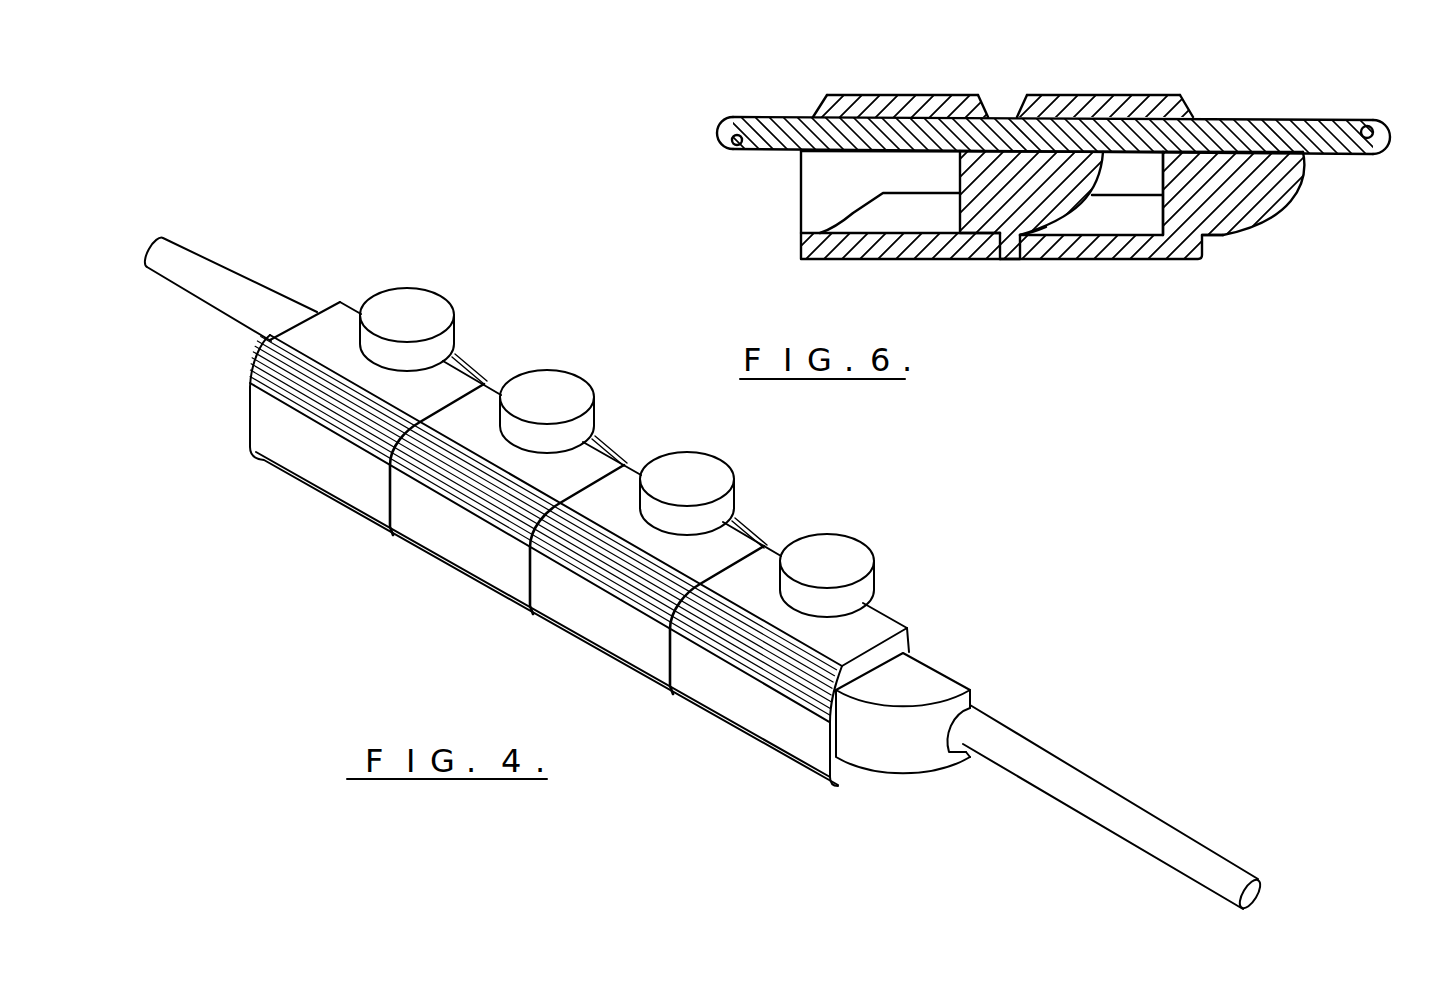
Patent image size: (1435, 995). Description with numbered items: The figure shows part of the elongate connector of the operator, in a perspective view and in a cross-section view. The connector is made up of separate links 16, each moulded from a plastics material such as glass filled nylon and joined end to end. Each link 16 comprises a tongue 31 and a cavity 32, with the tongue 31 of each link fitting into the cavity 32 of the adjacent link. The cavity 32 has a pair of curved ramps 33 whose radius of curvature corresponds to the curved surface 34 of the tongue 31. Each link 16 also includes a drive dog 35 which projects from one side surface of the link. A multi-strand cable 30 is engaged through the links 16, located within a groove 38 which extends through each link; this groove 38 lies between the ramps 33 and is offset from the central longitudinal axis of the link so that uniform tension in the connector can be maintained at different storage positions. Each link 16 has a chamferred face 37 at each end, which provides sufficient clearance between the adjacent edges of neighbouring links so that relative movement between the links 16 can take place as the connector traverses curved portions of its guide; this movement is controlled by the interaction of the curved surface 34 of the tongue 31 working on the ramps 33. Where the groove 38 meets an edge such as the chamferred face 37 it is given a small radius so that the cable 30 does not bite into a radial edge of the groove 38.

In FIG. 4, the link 16 is at (587, 636).
In FIG. 6, the link 16 is at (902, 93).
In FIG. 4, the multi-strand cable 30 is at (198, 263).
In FIG. 6, the multi-strand cable 30 is at (1345, 122).
In FIG. 4, the tongue 31 is at (922, 683).
In FIG. 6, the tongue 31 is at (1250, 182).
In FIG. 6, the cavity 32 is at (820, 168).
In FIG. 6, the curved ramps 33 is at (830, 208).
In FIG. 4, the curved surface 34 is at (898, 748).
In FIG. 6, the curved surface 34 is at (1278, 203).
In FIG. 4, the drive dog 35 is at (682, 467).
In FIG. 4, the chamferred face 37 is at (490, 387).
In FIG. 6, the chamferred face 37 is at (817, 117).
In FIG. 4, the groove 38 is at (948, 752).